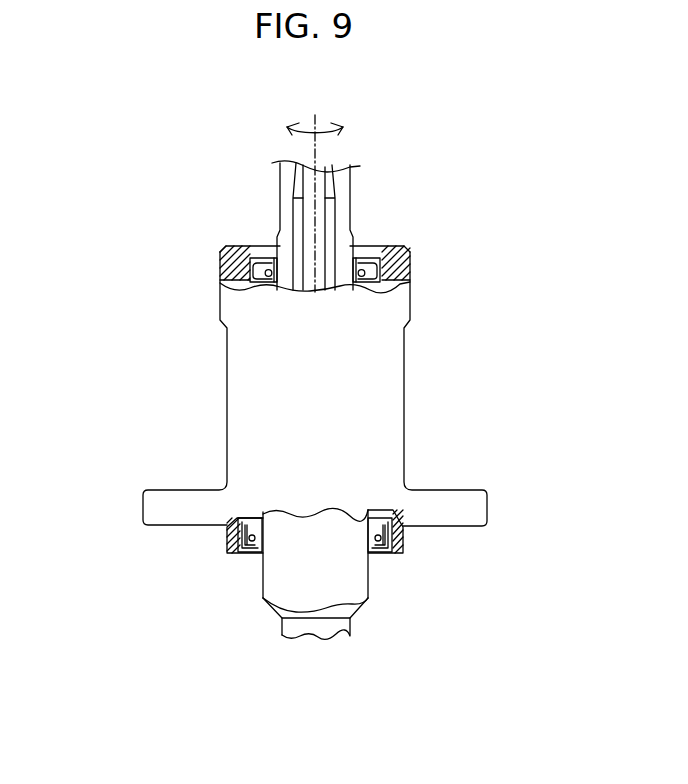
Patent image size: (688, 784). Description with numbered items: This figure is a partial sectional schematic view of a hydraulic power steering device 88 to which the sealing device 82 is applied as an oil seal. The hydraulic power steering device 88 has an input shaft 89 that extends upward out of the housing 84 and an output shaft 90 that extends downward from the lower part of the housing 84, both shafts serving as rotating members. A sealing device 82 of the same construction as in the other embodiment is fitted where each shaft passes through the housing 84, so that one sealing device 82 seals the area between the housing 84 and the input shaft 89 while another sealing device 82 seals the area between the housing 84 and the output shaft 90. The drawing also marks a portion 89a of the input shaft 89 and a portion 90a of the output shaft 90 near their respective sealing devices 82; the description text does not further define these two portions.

The sealing device 82 is at (363, 255).
The housing 84 is at (240, 249).
The hydraulic power steering device 88 is at (467, 197).
The input shaft 89 is at (278, 185).
The spline portion of shaft 89a is at (280, 215).
The output shaft 90 is at (263, 580).
The cylindrical portion of lower shaft 90a is at (263, 563).